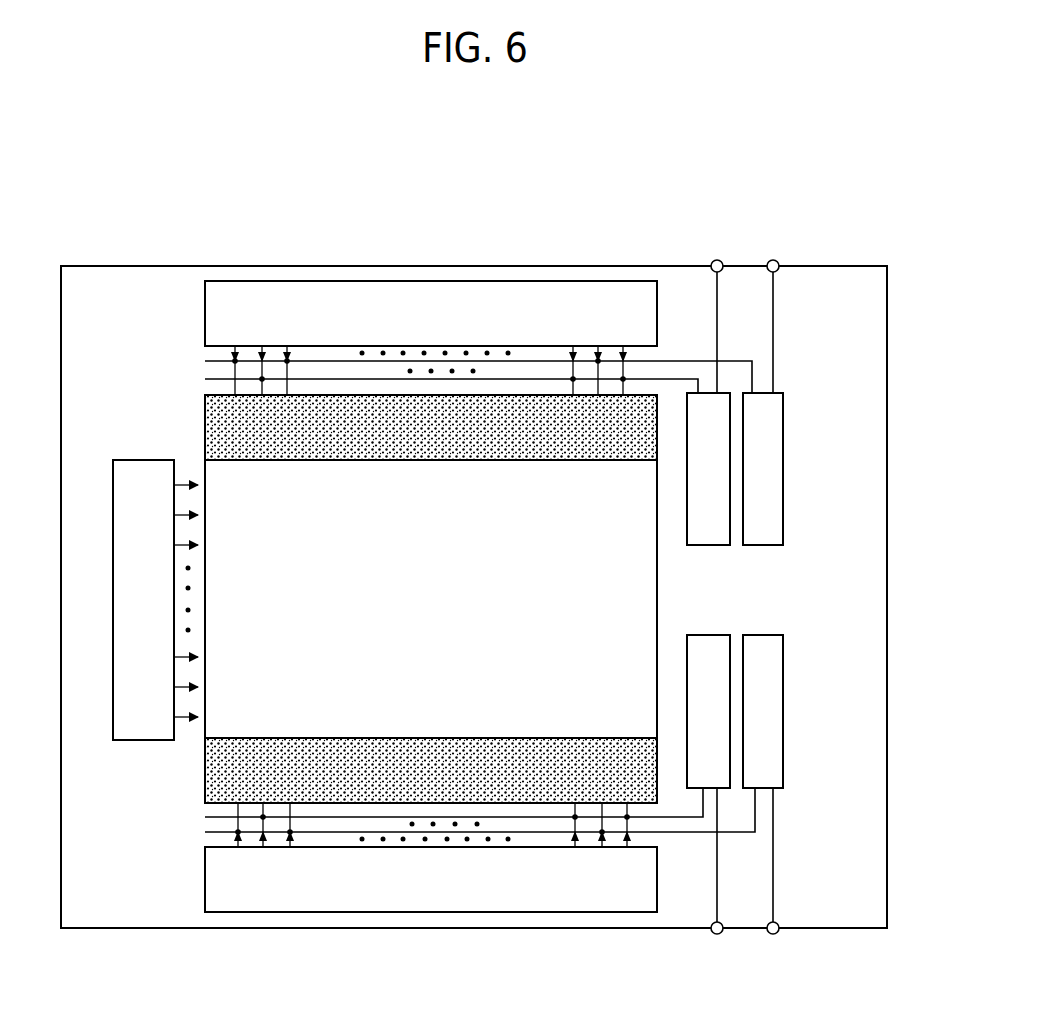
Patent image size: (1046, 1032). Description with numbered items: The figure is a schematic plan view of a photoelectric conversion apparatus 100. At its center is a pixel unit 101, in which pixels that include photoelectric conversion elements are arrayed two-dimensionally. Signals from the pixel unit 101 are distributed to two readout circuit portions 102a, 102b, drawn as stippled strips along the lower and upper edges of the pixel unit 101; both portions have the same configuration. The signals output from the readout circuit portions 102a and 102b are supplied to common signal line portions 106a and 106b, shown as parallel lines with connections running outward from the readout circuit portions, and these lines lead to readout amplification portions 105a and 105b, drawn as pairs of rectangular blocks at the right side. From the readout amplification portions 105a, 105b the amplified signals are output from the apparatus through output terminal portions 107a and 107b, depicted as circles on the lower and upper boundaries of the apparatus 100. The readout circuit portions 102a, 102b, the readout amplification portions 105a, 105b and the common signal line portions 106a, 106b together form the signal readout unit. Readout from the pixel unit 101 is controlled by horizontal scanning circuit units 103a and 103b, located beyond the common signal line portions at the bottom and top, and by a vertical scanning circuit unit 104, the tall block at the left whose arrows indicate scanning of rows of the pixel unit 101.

The photoelectric conversion apparatus 100 is at (488, 930).
The pixel unit 101 is at (658, 580).
The readout circuit portion 102a is at (205, 772).
The readout circuit portion 102b is at (205, 430).
The horizontal scanning circuit unit 103a is at (205, 885).
The horizontal scanning circuit unit 103b is at (205, 316).
The vertical scanning circuit unit 104 is at (113, 502).
The readout amplification portion 105a is at (789, 635).
The readout amplification portion 105b is at (789, 393).
The common signal line portion 106a is at (201, 803).
The common signal line portion 106b is at (201, 346).
The output terminal portion 107a is at (773, 935).
The output terminal portion 107b is at (773, 259).